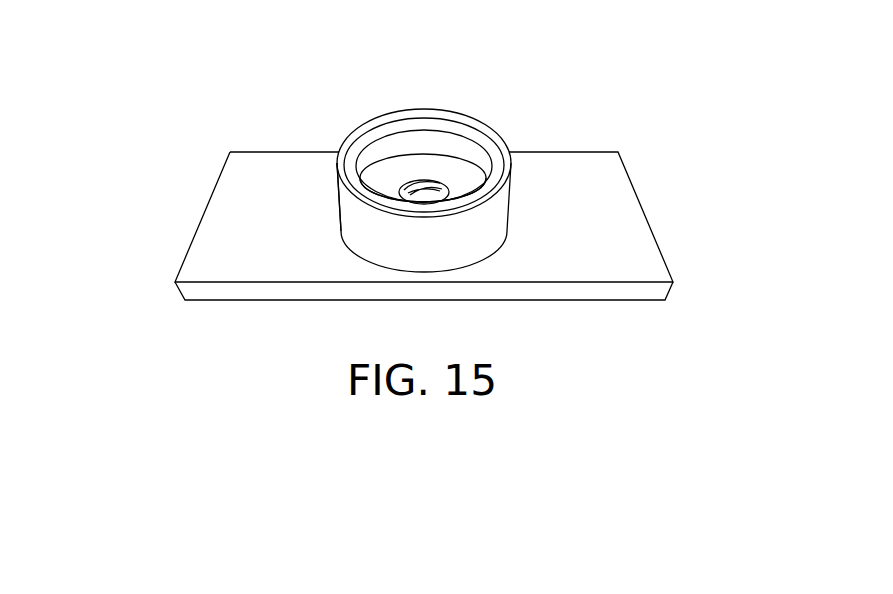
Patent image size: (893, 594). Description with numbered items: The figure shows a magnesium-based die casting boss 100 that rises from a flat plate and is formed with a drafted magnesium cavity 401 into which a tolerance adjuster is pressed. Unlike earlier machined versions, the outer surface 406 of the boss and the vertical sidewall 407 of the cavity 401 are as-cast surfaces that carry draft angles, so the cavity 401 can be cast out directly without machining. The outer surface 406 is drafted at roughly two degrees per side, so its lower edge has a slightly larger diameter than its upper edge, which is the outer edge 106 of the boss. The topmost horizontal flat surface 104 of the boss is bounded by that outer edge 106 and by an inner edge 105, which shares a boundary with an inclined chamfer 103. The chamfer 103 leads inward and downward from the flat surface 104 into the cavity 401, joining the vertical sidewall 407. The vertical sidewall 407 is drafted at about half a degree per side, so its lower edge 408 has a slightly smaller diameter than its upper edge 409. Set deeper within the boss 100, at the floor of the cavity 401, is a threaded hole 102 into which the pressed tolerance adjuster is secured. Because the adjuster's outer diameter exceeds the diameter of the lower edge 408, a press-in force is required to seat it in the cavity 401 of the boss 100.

The magnesium-based die casting boss 100 is at (288, 150).
The threaded hole 102 is at (425, 200).
The inclined chamfer 103 is at (485, 145).
The topmost horizontal flat surface 104 is at (513, 158).
The inner edge 105 is at (358, 152).
The outer edge 106 is at (333, 172).
The drafted magnesium cavity 401 is at (463, 178).
The outer surface 406 is at (353, 210).
The vertical sidewall 407 is at (402, 147).
The lower edge 408 is at (447, 153).
The upper edge 409 is at (423, 127).